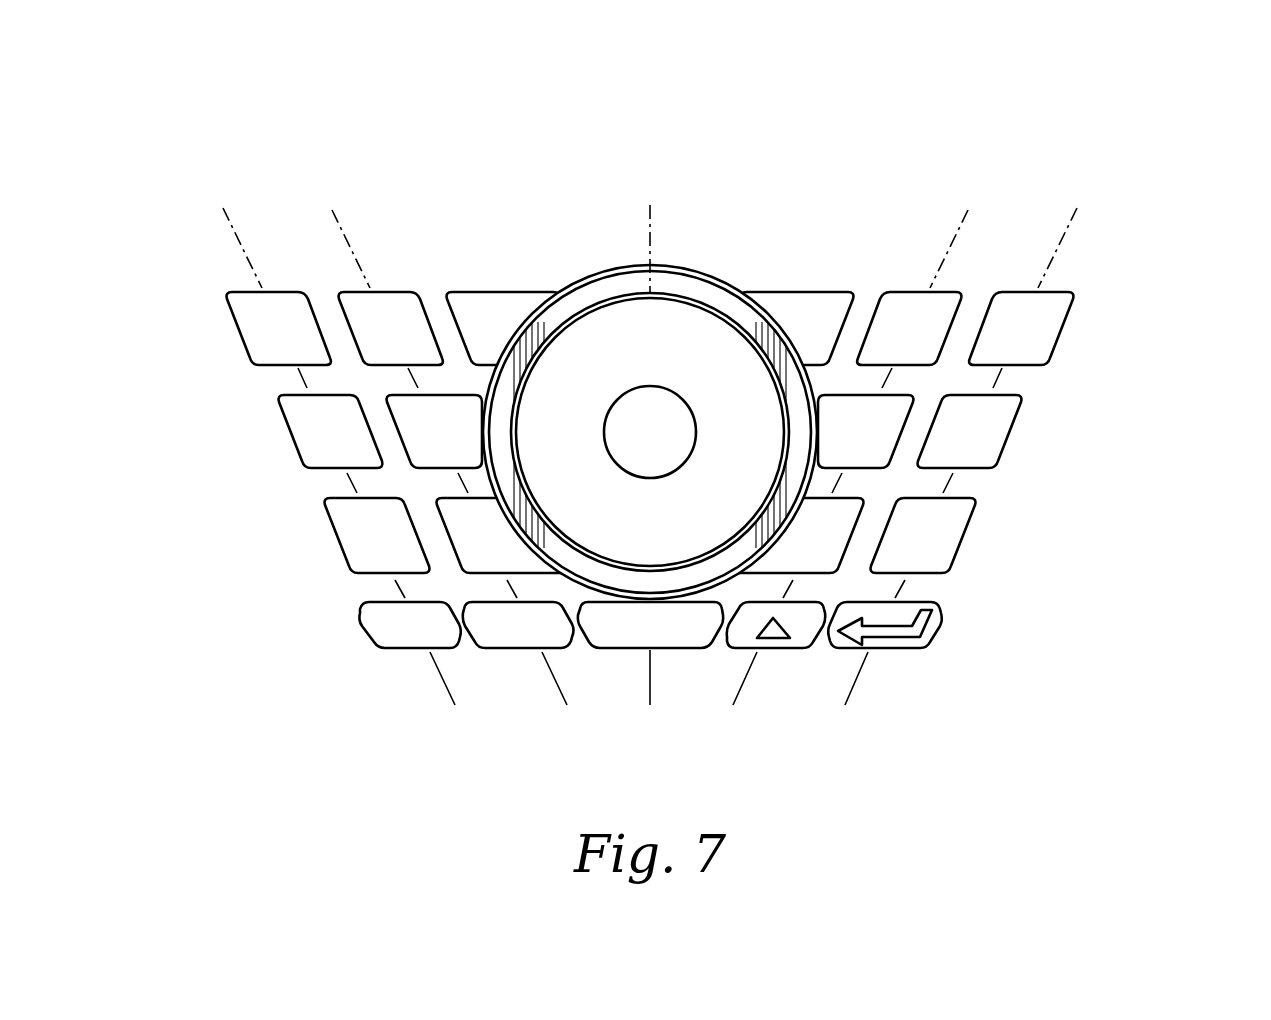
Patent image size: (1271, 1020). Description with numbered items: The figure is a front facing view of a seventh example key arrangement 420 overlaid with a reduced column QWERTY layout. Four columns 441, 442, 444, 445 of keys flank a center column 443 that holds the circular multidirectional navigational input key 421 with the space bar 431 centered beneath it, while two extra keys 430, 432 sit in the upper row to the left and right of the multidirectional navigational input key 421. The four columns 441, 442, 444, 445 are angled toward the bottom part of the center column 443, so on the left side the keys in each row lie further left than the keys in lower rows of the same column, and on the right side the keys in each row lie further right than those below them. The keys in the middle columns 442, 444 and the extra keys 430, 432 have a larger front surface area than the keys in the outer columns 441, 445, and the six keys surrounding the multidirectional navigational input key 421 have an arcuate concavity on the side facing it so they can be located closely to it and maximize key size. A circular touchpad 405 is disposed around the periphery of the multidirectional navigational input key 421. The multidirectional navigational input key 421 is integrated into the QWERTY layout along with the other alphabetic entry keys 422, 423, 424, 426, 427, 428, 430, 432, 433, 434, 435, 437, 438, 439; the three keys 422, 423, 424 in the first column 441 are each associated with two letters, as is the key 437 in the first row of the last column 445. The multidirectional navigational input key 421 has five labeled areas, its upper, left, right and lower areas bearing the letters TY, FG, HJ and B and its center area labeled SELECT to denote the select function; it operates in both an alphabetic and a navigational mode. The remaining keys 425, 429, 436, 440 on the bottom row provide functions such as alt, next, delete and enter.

The circular touchpad 405 is at (605, 288).
The key arrangement 420 is at (767, 170).
The multidirectional navigational input key 421 is at (688, 365).
The alphabetic entry key 422 is at (234, 333).
The alphabetic entry key 423 is at (283, 432).
The alphabetic entry key 424 is at (333, 540).
The bottom row key 425 is at (363, 633).
The alphabetic entry key 426 is at (340, 290).
The alphabetic entry key 427 is at (390, 398).
The alphabetic entry key 428 is at (440, 498).
The bottom row key 429 is at (513, 647).
The extra key 430 is at (507, 290).
The space bar 431 is at (627, 648).
The extra key 432 is at (797, 290).
The alphabetic entry key 433 is at (957, 290).
The alphabetic entry key 434 is at (918, 395).
The alphabetic entry key 435 is at (862, 498).
The bottom row key 436 is at (787, 647).
The alphabetic entry key 437 is at (1062, 333).
The alphabetic entry key 438 is at (1017, 428).
The alphabetic entry key 439 is at (965, 540).
The bottom row key 440 is at (940, 634).
The first column 441 is at (222, 212).
The second column 442 is at (335, 211).
The center column 443 is at (648, 208).
The third column 444 is at (968, 211).
The last column 445 is at (1078, 211).